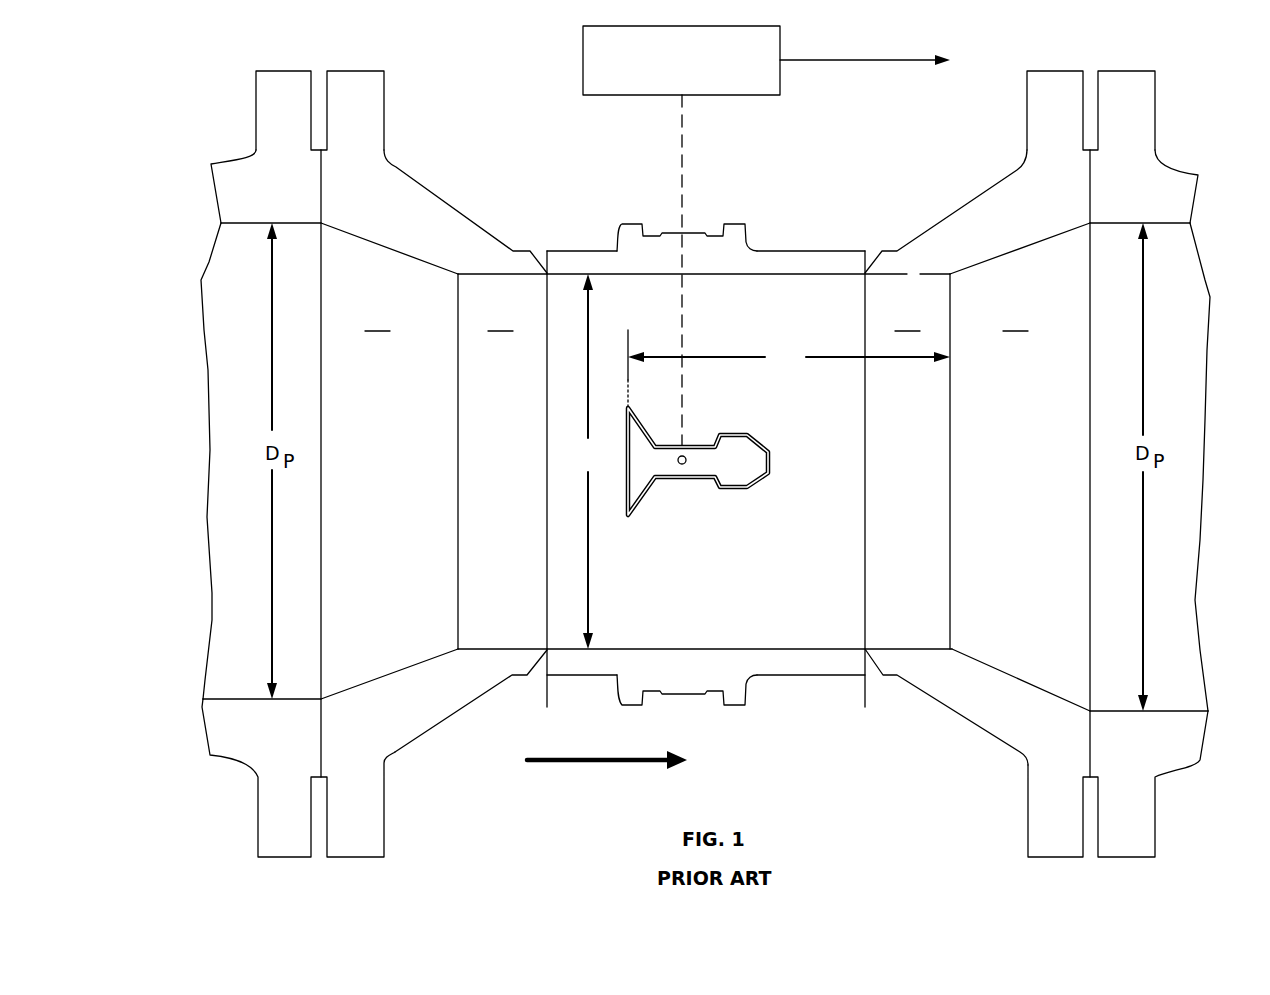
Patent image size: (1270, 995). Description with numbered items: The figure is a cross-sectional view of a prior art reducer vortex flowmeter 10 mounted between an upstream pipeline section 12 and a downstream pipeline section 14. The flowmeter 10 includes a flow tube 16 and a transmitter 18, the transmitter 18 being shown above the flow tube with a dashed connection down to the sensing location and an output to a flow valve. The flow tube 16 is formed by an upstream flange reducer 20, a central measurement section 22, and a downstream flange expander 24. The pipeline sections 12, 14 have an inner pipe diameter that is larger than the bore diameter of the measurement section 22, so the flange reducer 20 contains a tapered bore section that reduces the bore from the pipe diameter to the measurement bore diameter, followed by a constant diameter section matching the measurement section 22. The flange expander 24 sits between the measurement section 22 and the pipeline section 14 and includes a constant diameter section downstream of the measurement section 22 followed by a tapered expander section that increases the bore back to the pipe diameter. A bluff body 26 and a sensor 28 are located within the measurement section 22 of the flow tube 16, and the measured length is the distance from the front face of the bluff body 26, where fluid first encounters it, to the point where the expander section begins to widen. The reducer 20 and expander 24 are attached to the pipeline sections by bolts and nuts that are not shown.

The reducer vortex flowmeter 10 is at (492, 787).
The pipeline section 12 is at (237, 132).
The pipeline section 14 is at (1180, 134).
The flow tube 16 is at (836, 710).
The transmitter 18 is at (637, 97).
The upstream flange reducer 20 is at (428, 165).
The measurement section 22 is at (798, 230).
The downstream flange expander 24 is at (980, 133).
The bluff body 26 is at (648, 540).
The sensor 28 is at (686, 464).